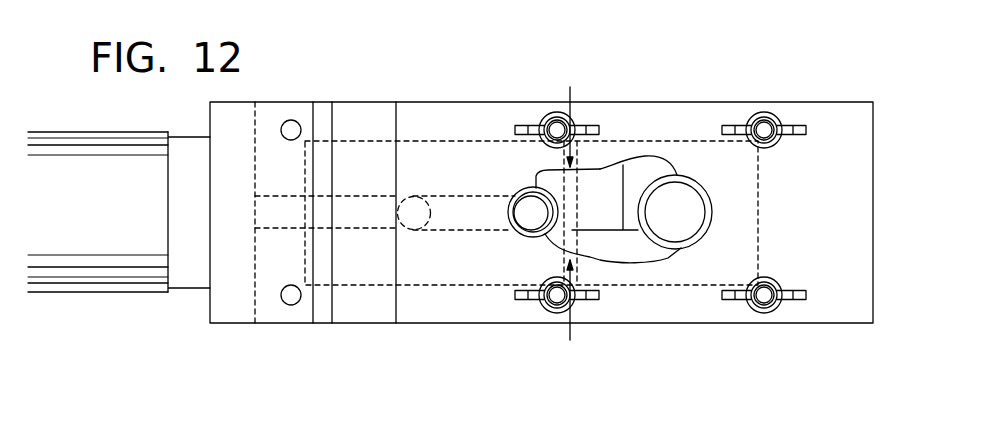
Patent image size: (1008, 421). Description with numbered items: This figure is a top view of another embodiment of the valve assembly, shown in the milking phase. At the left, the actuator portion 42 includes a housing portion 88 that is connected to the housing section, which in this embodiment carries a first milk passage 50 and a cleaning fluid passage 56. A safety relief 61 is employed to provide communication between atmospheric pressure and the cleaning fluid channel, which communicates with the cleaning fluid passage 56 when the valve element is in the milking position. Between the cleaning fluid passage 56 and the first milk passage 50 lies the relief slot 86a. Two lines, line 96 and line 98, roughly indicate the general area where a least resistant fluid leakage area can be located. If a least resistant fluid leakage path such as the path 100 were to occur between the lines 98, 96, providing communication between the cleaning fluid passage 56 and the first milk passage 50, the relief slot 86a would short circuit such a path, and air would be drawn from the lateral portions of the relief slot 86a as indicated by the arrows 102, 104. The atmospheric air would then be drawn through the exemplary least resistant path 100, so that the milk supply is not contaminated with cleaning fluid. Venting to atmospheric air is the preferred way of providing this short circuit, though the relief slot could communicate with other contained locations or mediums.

The actuator portion 42 is at (122, 316).
The housing portion 88 is at (95, 152).
The safety relief 61 is at (350, 213).
The line 98 is at (532, 174).
The arrow 104 is at (570, 88).
The relief slot 86a is at (570, 187).
The least resistant fluid leakage path 100 is at (623, 165).
The cleaning fluid passage 56 is at (518, 225).
The arrow 102 is at (570, 340).
The line 96 is at (634, 263).
The first milk passage 50 is at (703, 240).